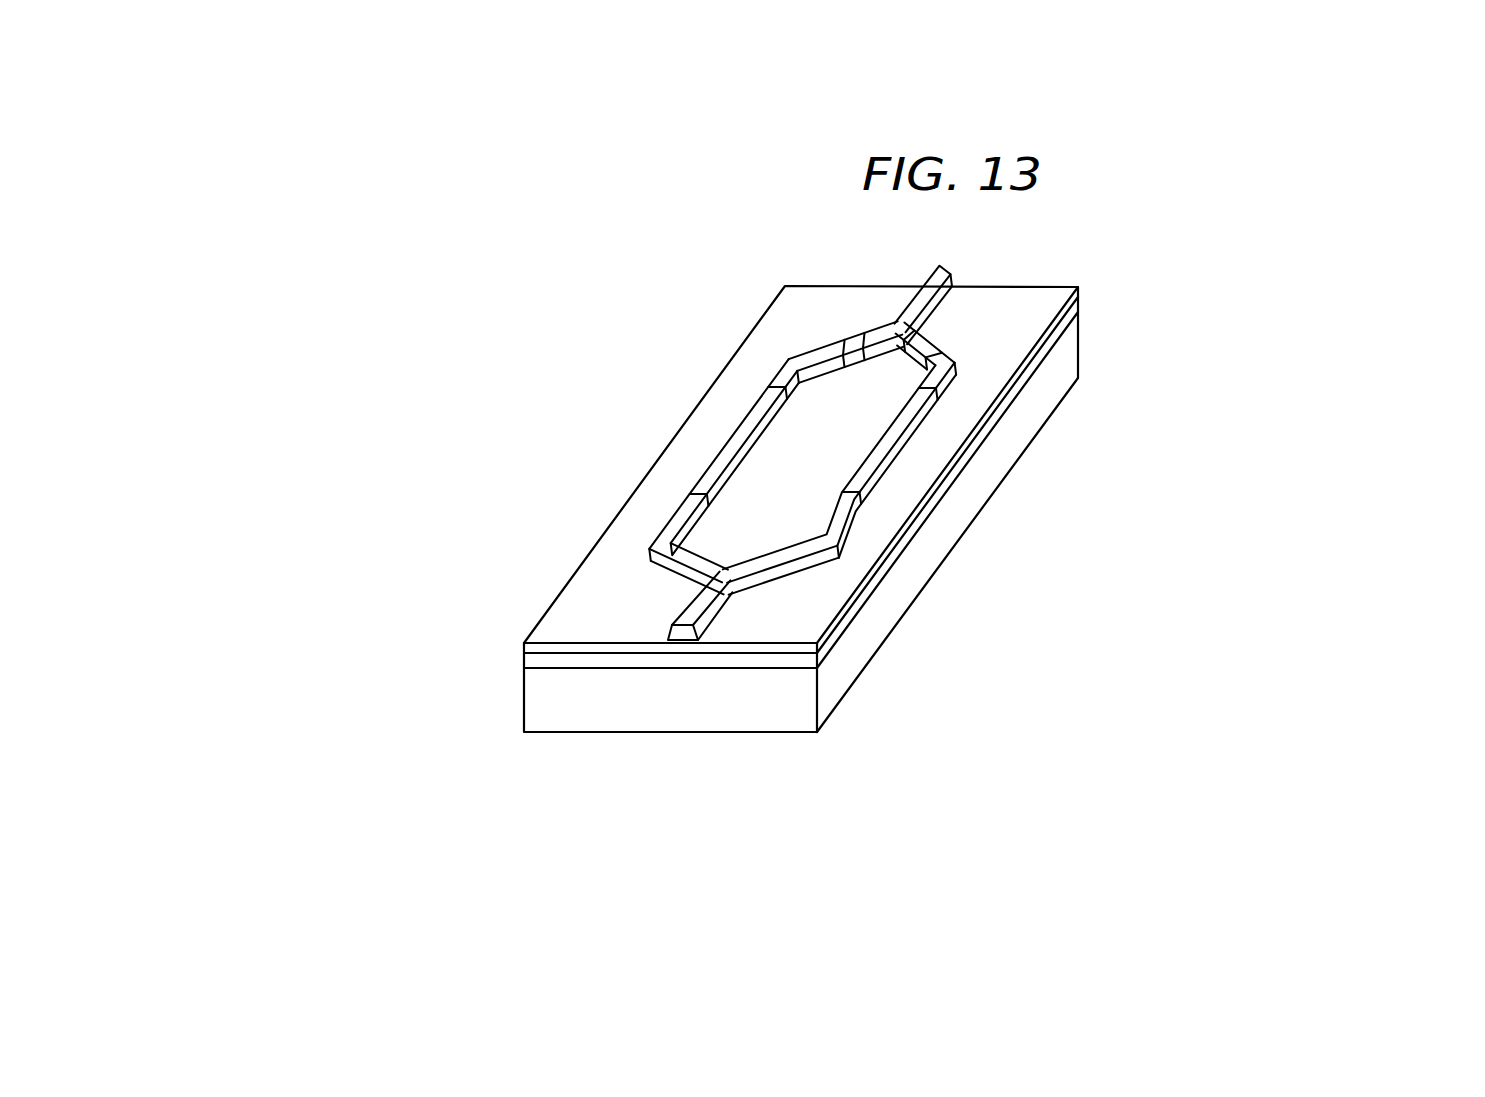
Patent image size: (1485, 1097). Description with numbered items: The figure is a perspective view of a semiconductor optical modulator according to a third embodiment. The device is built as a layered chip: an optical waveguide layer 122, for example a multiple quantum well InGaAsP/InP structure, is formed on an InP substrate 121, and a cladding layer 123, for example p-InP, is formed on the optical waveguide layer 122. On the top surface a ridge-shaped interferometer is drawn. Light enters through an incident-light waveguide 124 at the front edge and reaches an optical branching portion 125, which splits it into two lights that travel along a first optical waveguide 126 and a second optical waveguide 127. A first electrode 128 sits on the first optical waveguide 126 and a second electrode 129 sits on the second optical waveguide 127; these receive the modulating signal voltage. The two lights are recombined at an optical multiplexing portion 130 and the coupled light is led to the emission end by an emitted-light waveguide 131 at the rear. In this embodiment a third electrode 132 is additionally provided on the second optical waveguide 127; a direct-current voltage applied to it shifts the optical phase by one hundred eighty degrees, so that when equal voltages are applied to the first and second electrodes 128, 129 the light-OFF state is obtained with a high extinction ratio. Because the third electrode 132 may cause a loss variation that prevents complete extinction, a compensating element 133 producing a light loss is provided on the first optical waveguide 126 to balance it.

The InP substrate 121 is at (822, 688).
The optical waveguide layer 122 is at (822, 659).
The cladding layer 123 is at (822, 634).
The incident-light waveguide 124 is at (700, 608).
The optical branching portion 125 is at (717, 575).
The first optical waveguide 126 is at (680, 515).
The second optical waveguide 127 is at (843, 508).
The first electrode 128 is at (728, 454).
The second electrode 129 is at (878, 455).
The optical multiplexing portion 130 is at (897, 320).
The emitted-light waveguide 131 is at (917, 304).
The third electrode 132 is at (940, 344).
The compensating element 133 is at (840, 341).